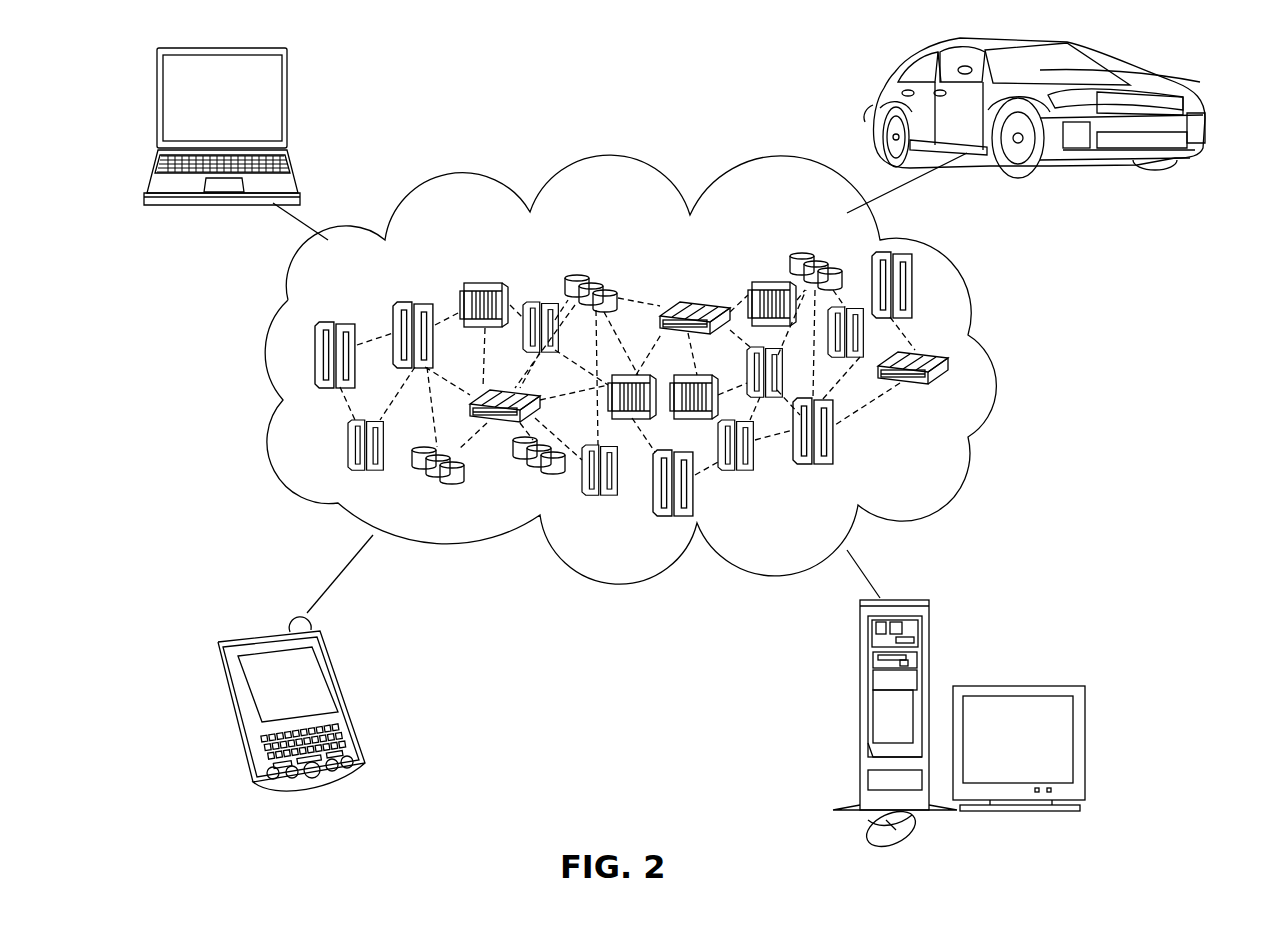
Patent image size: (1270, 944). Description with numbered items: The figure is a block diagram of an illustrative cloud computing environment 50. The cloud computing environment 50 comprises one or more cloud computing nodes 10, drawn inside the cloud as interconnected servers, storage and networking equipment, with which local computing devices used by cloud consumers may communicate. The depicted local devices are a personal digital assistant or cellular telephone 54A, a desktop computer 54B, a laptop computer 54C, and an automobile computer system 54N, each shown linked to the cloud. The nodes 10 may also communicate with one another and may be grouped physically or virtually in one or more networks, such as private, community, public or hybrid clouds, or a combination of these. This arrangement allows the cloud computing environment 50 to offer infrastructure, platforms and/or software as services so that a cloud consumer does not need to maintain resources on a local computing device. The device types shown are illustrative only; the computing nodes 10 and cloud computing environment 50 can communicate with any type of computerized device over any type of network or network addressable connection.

The cloud computing environment 50 is at (1013, 367).
The cloud computing nodes 10 is at (930, 457).
The personal digital assistant or cellular telephone 54A is at (337, 667).
The desktop computer 54B is at (860, 652).
The laptop computer 54C is at (287, 83).
The automobile computer system 54N is at (879, 100).